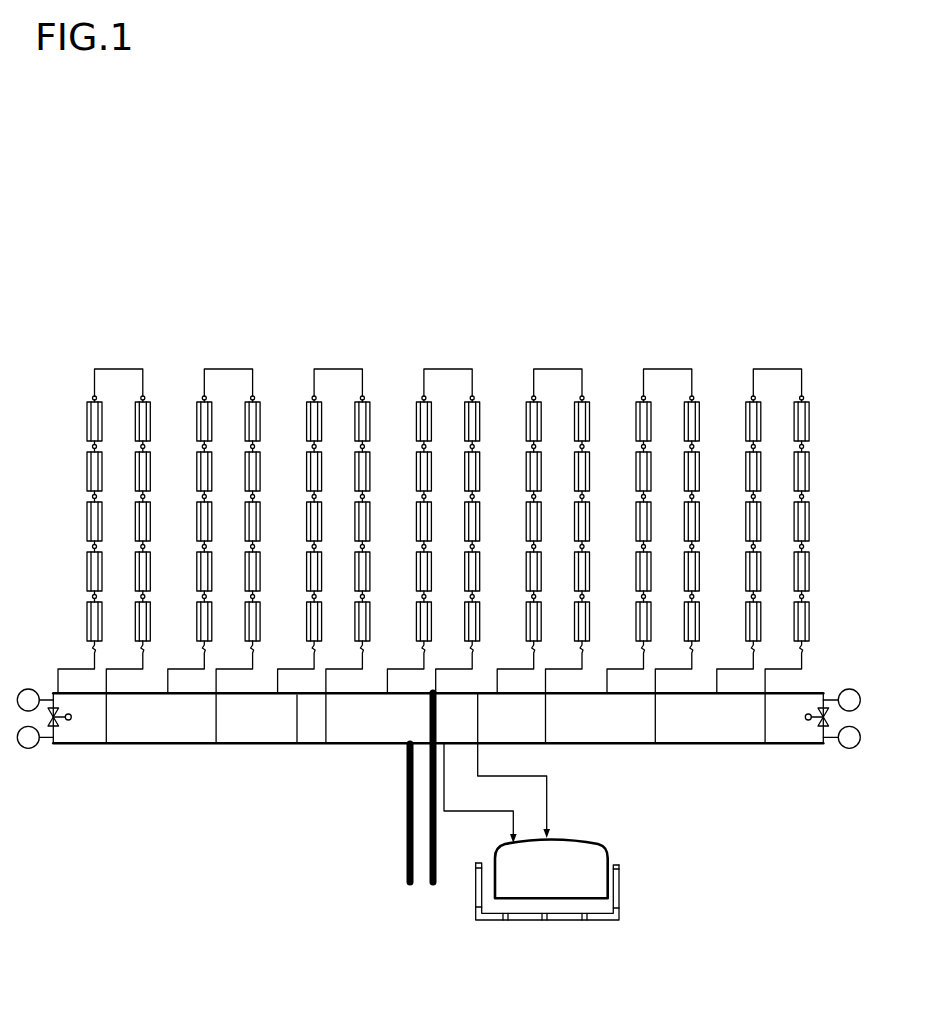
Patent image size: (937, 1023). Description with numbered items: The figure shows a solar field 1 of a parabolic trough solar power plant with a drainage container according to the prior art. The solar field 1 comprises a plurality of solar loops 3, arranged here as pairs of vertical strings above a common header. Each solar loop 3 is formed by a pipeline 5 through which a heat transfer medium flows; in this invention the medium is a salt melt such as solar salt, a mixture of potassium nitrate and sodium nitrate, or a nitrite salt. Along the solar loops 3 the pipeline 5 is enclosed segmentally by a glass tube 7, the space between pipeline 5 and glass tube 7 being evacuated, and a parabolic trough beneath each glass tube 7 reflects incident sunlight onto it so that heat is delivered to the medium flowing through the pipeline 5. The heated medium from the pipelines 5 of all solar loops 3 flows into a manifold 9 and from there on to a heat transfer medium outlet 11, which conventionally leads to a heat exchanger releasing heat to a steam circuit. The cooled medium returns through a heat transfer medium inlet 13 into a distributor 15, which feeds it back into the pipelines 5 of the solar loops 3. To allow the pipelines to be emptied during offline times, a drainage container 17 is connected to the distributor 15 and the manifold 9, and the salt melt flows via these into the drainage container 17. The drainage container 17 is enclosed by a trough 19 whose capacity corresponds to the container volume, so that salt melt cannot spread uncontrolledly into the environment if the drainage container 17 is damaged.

The solar field 1 is at (161, 326).
The solar loop 3 is at (230, 368).
The pipeline 5 is at (643, 385).
The glass tube 7 is at (87, 422).
The manifold 9 is at (253, 743).
The heat transfer medium outlet 11 is at (405, 866).
The heat transfer medium inlet 13 is at (435, 867).
The distributor 15 is at (297, 697).
The drainage container 17 is at (607, 859).
The trough 19 is at (620, 888).